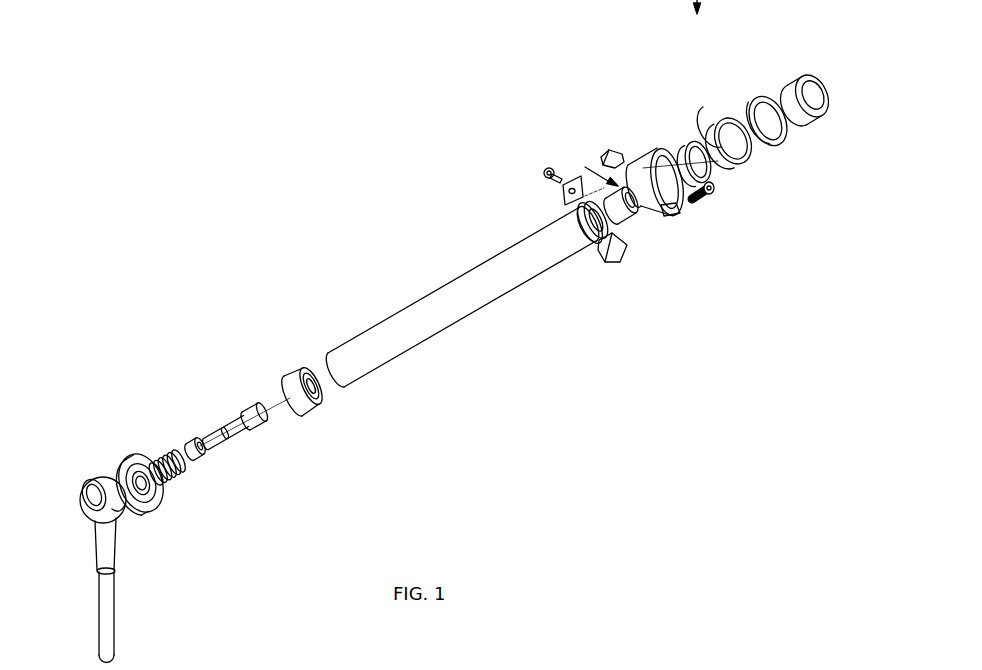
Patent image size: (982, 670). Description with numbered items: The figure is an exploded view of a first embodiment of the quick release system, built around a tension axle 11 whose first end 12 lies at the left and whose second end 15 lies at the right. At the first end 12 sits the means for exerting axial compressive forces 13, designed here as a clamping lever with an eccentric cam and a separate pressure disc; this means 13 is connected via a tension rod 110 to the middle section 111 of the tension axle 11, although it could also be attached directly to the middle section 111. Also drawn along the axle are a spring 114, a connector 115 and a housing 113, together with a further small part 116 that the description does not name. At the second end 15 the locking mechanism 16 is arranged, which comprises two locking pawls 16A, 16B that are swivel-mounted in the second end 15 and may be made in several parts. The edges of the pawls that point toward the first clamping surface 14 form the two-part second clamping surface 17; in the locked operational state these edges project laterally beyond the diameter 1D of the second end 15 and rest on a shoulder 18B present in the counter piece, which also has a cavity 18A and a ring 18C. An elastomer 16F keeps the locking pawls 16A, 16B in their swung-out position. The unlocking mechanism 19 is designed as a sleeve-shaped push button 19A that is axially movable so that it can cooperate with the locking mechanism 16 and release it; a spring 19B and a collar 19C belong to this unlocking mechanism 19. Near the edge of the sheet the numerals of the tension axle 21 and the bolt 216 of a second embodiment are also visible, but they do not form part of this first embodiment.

The tension axle 11 is at (291, 199).
The first end 12 is at (243, 317).
The means for exerting axial compressive forces 13 is at (98, 420).
The first clamping surface 14 is at (163, 497).
The second end 15 is at (538, 132).
The locking mechanism 16 is at (644, 260).
The locking pawl 16A is at (620, 250).
The locking pawl 16B is at (604, 155).
The elastomer 16F is at (598, 236).
The second clamping surface 17 is at (568, 178).
The cavity 18A is at (672, 126).
The shoulder 18B is at (730, 148).
The ring 18C is at (695, 113).
The unlocking mechanism 19 is at (809, 252).
The button 19A is at (828, 110).
The spring 19B is at (723, 114).
The collar 19C is at (777, 140).
The tension rod 110 is at (223, 440).
The middle section 111 is at (458, 312).
The housing 113 is at (633, 165).
The spring 114 is at (220, 448).
The connector 115 is at (316, 392).
The pin 116 is at (707, 165).
The diameter 1D is at (643, 221).
The bolt 216 is at (712, 641).
The tension axle 21 is at (510, 665).